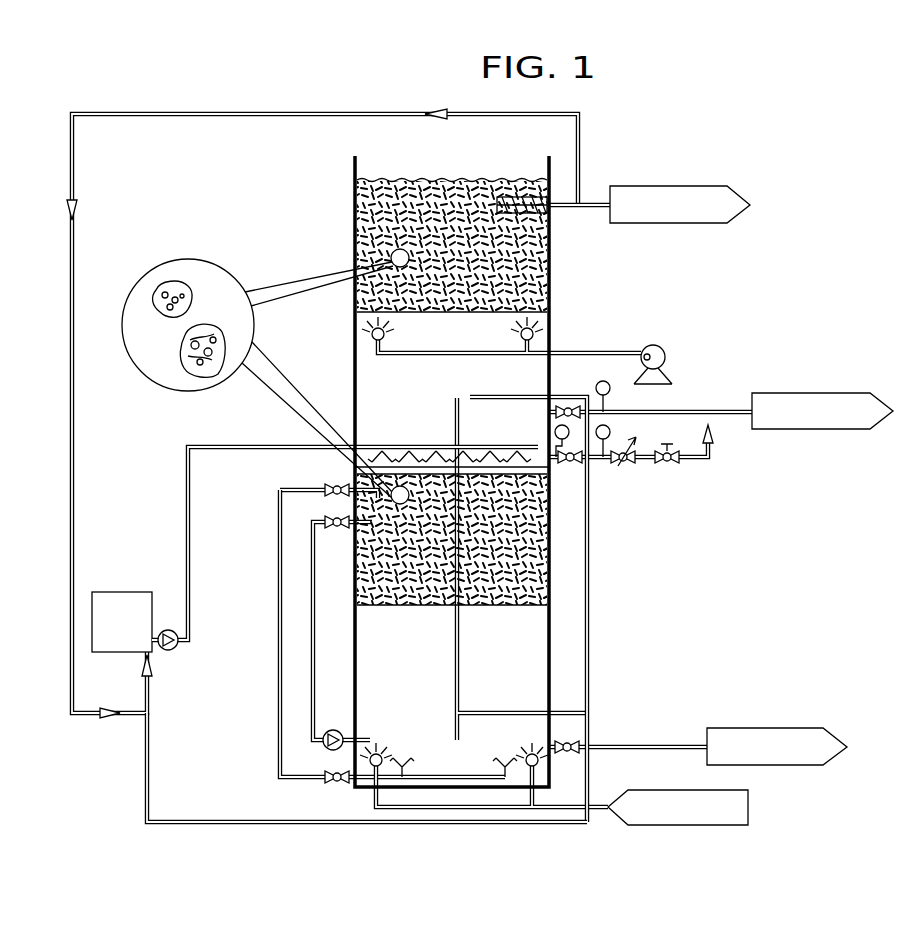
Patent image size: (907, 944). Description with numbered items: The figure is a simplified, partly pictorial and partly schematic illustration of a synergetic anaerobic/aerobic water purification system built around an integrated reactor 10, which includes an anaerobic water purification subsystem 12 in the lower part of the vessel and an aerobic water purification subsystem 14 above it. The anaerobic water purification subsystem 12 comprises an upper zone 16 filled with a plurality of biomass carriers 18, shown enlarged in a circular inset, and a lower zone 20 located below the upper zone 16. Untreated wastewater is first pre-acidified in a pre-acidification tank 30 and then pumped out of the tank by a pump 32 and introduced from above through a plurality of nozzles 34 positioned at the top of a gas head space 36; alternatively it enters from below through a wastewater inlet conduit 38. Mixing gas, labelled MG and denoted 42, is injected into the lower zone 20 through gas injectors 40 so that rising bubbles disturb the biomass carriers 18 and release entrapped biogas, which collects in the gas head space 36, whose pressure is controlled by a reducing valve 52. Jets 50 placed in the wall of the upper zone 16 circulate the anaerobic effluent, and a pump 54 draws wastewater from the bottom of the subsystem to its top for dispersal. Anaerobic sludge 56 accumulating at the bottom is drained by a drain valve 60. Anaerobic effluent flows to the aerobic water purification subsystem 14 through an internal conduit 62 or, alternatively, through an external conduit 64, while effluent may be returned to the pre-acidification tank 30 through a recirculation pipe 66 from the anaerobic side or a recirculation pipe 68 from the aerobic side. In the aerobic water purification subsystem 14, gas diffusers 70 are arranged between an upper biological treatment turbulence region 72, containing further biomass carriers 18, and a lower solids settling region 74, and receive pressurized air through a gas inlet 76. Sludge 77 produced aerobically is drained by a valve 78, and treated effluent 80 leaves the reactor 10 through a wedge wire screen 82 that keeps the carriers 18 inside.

The integrated reactor 10 is at (793, 287).
The anaerobic water purification subsystem 12 is at (563, 598).
The aerobic water purification subsystem 14 is at (575, 240).
The upper zone 16 is at (533, 500).
The biomass carriers 18 is at (203, 290).
The lower zone 20 is at (521, 703).
The pre-acidification tank 30 is at (132, 592).
The pump 32 is at (171, 651).
The nozzles 34 is at (388, 445).
The gas head space 36 is at (538, 466).
The wastewater inlet conduit 38 is at (356, 797).
The gas injectors 40 is at (556, 812).
The methane gas source 42 is at (662, 790).
The jets 50 is at (337, 484).
The reducing valve 52 is at (636, 462).
The pump 54 is at (324, 733).
The anaerobic sludge 56 is at (763, 728).
The drain valve 60 is at (580, 746).
The internal conduit 62 is at (455, 655).
The external conduit 64 is at (590, 678).
The recirculation pipe 66 is at (172, 822).
The recirculation pipe 68 is at (242, 114).
The gas diffusers 70 is at (533, 338).
The upper biological treatment turbulence region 72 is at (372, 205).
The lower solids settling region 74 is at (385, 381).
The gas inlet 76 is at (662, 358).
The sludge 77 is at (800, 393).
The valve 78 is at (566, 406).
The treated effluent 80 is at (684, 186).
The wedge wire screen 82 is at (560, 198).